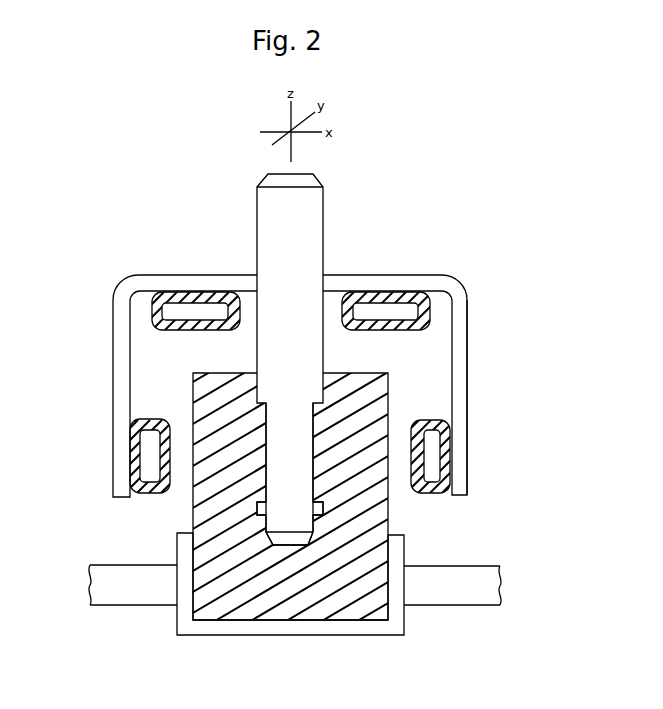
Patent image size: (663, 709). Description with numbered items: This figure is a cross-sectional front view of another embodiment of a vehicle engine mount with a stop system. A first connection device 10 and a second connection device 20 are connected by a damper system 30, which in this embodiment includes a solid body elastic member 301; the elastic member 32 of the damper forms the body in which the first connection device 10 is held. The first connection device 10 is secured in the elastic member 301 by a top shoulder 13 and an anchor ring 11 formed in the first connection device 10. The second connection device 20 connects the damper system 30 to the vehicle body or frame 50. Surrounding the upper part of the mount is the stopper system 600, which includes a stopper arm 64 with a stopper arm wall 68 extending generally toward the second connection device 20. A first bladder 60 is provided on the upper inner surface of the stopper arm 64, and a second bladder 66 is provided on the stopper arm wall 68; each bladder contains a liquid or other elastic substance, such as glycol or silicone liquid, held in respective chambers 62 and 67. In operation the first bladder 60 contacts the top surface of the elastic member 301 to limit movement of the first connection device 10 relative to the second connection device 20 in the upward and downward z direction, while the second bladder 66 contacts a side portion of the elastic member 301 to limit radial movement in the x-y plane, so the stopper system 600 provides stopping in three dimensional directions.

The first connection device 10 is at (268, 359).
The anchor ring 11 is at (263, 497).
The top shoulder 13 is at (262, 402).
The second connection device 20 is at (407, 622).
The damper system 30 is at (312, 488).
The solid body elastic member 301 is at (247, 595).
The elastic member 32 is at (382, 503).
The vehicle body or frame 50 is at (472, 568).
The first bladder 60 is at (292, 327).
The chamber 62 is at (397, 311).
The stopper arm 64 is at (357, 280).
The second bladder 66 is at (290, 441).
The chamber 67 is at (435, 452).
The stopper arm wall 68 is at (467, 375).
The stopper system 600 is at (277, 373).